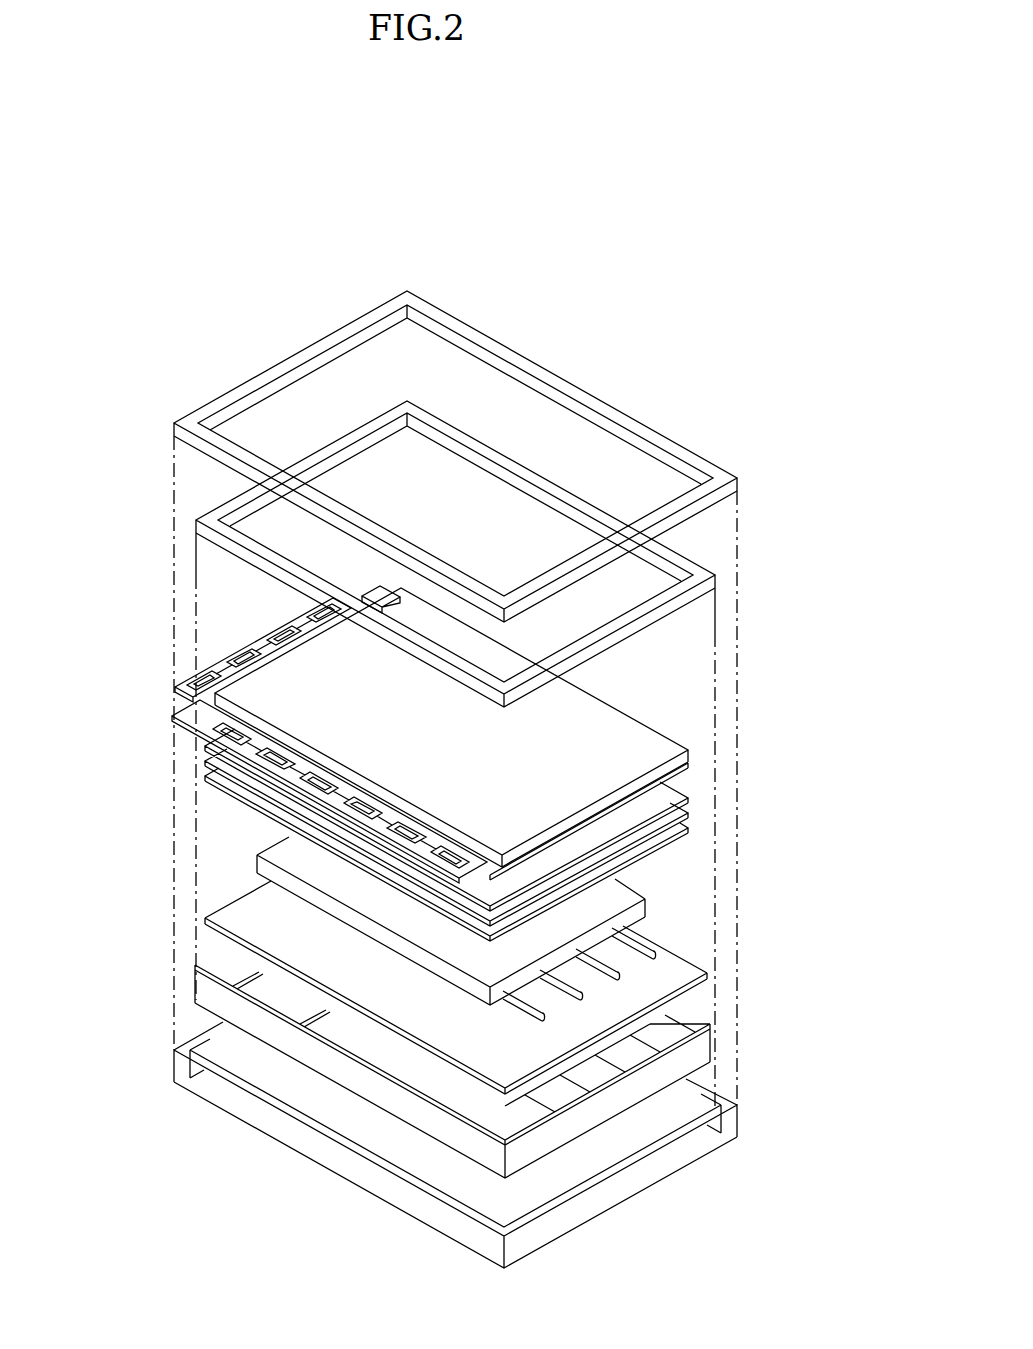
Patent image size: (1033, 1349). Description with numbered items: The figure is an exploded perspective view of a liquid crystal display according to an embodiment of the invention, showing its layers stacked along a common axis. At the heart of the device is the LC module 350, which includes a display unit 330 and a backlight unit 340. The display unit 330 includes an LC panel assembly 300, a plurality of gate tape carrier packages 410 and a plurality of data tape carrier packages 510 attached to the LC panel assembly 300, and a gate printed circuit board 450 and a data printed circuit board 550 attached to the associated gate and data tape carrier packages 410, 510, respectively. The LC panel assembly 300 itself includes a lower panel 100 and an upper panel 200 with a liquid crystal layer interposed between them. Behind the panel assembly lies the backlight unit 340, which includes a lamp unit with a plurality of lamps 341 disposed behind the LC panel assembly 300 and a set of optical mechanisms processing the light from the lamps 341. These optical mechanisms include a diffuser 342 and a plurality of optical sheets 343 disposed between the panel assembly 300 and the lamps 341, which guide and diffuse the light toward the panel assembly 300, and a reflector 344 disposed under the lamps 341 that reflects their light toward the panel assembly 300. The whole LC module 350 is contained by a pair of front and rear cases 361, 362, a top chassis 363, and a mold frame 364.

The lower panel 100 is at (690, 766).
The upper panel 200 is at (694, 744).
The LC panel assembly 300 is at (643, 748).
The display unit 330 is at (636, 694).
The backlight unit 340 is at (838, 790).
The lamps 341 is at (642, 945).
The diffuser 342 is at (655, 912).
The optical sheets 343 is at (740, 797).
The reflector 344 is at (641, 984).
The LC module 350 is at (66, 527).
The front case 361 is at (490, 346).
The rear case 362 is at (620, 1190).
The top chassis 363 is at (668, 611).
The mold frame 364 is at (640, 1083).
The gate tape carrier packages 410 is at (252, 668).
The gate printed circuit board 450 is at (287, 642).
The data tape carrier packages 510 is at (168, 717).
The data printed circuit board 550 is at (198, 752).